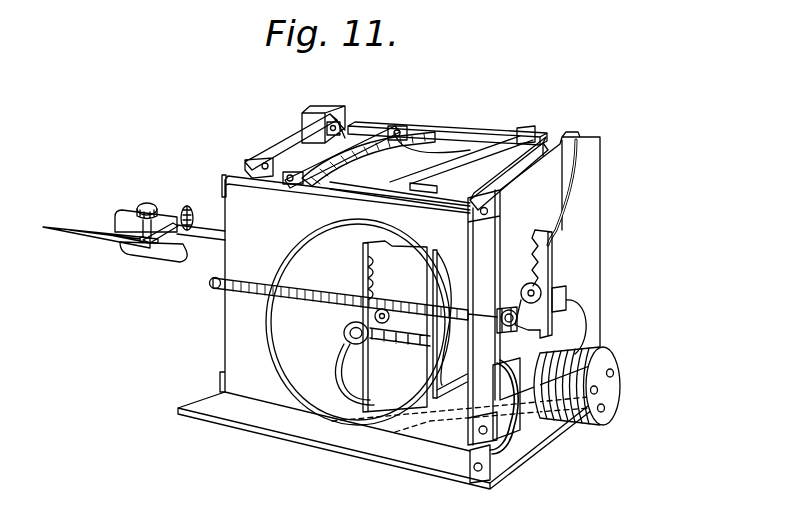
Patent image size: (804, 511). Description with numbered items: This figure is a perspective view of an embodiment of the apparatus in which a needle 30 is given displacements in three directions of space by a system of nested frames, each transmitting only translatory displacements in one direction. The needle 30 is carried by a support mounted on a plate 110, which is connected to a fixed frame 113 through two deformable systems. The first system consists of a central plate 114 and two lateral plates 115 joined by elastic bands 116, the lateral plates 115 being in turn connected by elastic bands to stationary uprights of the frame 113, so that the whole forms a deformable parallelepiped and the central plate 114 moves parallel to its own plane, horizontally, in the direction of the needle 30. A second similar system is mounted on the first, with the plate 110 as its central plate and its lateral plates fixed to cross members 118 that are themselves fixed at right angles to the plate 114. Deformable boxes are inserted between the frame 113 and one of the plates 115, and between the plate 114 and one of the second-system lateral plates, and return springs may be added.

The needle 30 is at (88, 237).
The plate 110 is at (360, 150).
The fixed frame 113 is at (583, 270).
The central plate 114 is at (242, 203).
The lateral plates 115 is at (282, 155).
The elastic bands 116 is at (335, 148).
The cross members 118 is at (540, 145).